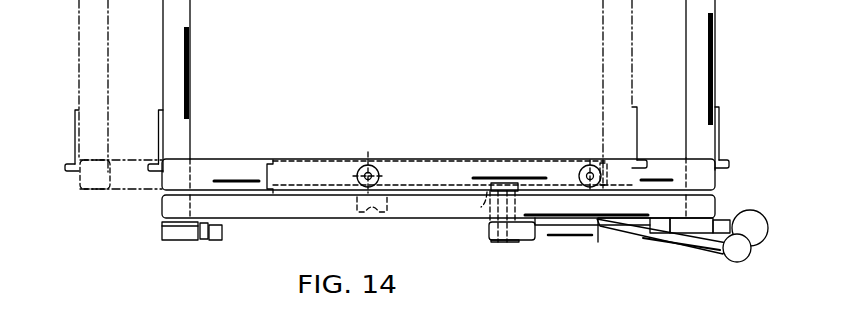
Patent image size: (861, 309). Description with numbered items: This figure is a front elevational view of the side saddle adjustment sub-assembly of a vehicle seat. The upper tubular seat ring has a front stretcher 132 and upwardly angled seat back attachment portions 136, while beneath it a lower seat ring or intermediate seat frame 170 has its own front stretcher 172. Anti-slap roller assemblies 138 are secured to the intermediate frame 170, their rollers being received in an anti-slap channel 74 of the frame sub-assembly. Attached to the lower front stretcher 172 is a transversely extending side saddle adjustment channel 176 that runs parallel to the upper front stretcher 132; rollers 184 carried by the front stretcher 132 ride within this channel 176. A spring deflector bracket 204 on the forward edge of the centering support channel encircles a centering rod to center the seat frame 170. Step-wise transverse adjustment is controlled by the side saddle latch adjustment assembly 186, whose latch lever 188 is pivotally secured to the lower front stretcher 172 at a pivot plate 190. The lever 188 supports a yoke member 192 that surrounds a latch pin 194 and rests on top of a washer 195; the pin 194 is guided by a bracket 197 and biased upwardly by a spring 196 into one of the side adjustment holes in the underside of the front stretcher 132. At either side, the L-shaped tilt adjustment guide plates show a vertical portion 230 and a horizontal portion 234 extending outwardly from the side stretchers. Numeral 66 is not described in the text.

The frame member 66 is at (278, 306).
The anti-slap channel 74 is at (549, 308).
The front stretcher 132 is at (221, 158).
The seat back attachment portions 136 is at (191, 72).
The anti-slap roller assembly 138 is at (176, 249).
The lower seat ring 170 is at (147, 200).
The front stretcher 172 is at (264, 222).
The side saddle adjustment channel 176 is at (503, 170).
The roller 184 is at (366, 145).
The side saddle latch adjustment assembly 186 is at (708, 258).
The latch lever 188 is at (637, 237).
The pivot plate 190 is at (593, 221).
The yoke member 192 is at (531, 228).
The latch pin 194 is at (507, 242).
The washer 195 is at (493, 243).
The spring 196 is at (479, 183).
The bracket 197 is at (487, 222).
The spring deflector bracket 204 is at (394, 190).
The vertical portion 230 is at (156, 126).
The horizontal portion 234 is at (155, 162).